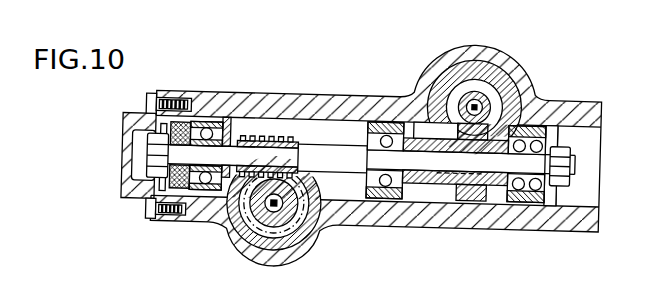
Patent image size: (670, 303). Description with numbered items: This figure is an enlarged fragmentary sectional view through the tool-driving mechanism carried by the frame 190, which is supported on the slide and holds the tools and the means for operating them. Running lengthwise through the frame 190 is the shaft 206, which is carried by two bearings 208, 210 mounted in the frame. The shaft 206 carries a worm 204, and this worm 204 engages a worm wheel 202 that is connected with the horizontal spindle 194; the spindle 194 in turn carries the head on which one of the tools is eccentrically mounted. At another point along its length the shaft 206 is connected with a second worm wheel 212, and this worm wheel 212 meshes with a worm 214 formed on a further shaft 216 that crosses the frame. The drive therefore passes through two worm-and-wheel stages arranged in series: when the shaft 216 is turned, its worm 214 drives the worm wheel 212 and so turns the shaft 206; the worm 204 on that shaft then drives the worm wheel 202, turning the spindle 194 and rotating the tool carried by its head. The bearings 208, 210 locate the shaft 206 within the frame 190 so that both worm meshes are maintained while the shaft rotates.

The frame 190 is at (580, 224).
The spindle 194 is at (276, 207).
The worm wheel 202 is at (238, 236).
The worm 204 is at (284, 140).
The shaft 206 is at (347, 167).
The bearing 208 is at (197, 212).
The bearing 210 is at (380, 195).
The worm wheel 212 is at (465, 186).
The worm 214 is at (528, 88).
The shaft 216 is at (474, 100).